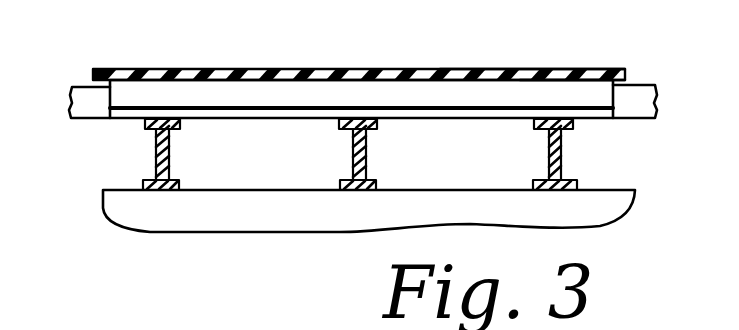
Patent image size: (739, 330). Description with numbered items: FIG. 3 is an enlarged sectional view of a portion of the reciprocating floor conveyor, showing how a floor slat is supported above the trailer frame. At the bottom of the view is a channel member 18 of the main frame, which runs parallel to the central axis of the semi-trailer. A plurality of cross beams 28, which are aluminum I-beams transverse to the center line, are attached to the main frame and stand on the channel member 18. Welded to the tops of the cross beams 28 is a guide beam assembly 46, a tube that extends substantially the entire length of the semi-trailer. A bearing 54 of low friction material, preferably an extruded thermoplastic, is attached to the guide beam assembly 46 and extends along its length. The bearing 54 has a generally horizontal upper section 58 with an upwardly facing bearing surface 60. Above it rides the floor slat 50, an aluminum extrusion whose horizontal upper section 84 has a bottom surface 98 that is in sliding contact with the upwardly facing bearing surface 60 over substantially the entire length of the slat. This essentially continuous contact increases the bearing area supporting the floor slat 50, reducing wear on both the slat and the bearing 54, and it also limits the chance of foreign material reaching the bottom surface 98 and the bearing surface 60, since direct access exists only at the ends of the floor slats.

The channel member 18 is at (320, 217).
The cross beam 28 is at (561, 151).
The guide beam assembly 46 is at (87, 123).
The floor slat 50 is at (400, 72).
The bearing 54 is at (477, 100).
The generally horizontal upper section 58 is at (498, 52).
The upwardly facing bearing surface 60 is at (541, 72).
The horizontal upper section 84 is at (300, 72).
The bottom surface 98 is at (250, 120).